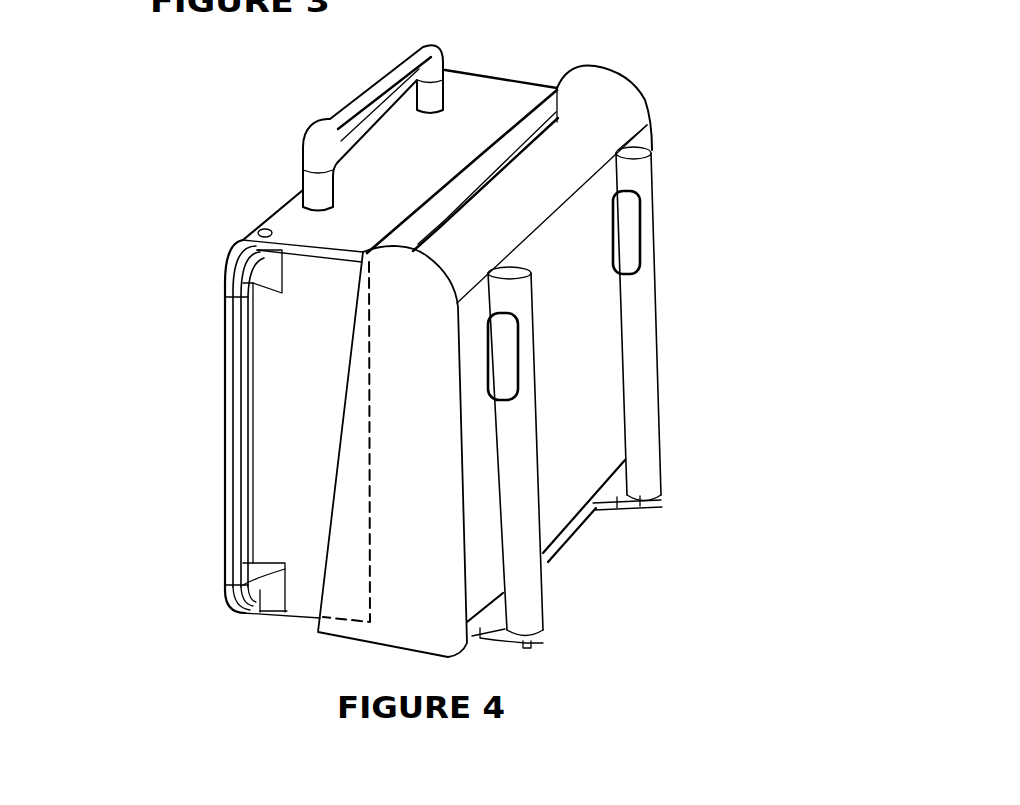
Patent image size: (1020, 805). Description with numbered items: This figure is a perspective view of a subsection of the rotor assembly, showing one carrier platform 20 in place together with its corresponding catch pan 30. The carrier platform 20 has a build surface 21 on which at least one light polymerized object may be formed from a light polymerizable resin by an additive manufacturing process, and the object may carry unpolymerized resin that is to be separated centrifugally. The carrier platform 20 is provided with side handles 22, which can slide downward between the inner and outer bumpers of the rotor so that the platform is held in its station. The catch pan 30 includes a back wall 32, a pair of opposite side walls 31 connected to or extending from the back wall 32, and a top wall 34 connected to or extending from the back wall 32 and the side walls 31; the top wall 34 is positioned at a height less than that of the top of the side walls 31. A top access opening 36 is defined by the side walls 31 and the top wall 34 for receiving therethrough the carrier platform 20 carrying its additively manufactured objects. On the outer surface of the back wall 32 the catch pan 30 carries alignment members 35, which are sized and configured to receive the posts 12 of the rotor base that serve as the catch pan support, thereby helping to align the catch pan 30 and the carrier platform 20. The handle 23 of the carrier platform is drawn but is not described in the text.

The carrier platform 20 is at (222, 238).
The build surface 21 is at (536, 121).
The side handles 22 is at (237, 382).
The handle 23 is at (362, 95).
The catch pan 30 is at (590, 365).
The side walls 31 is at (403, 597).
The back wall 32 is at (560, 500).
The top wall 34 is at (605, 97).
The alignment member 35 is at (637, 238).
The top access opening 36 is at (472, 174).
The posts 12 is at (640, 297).